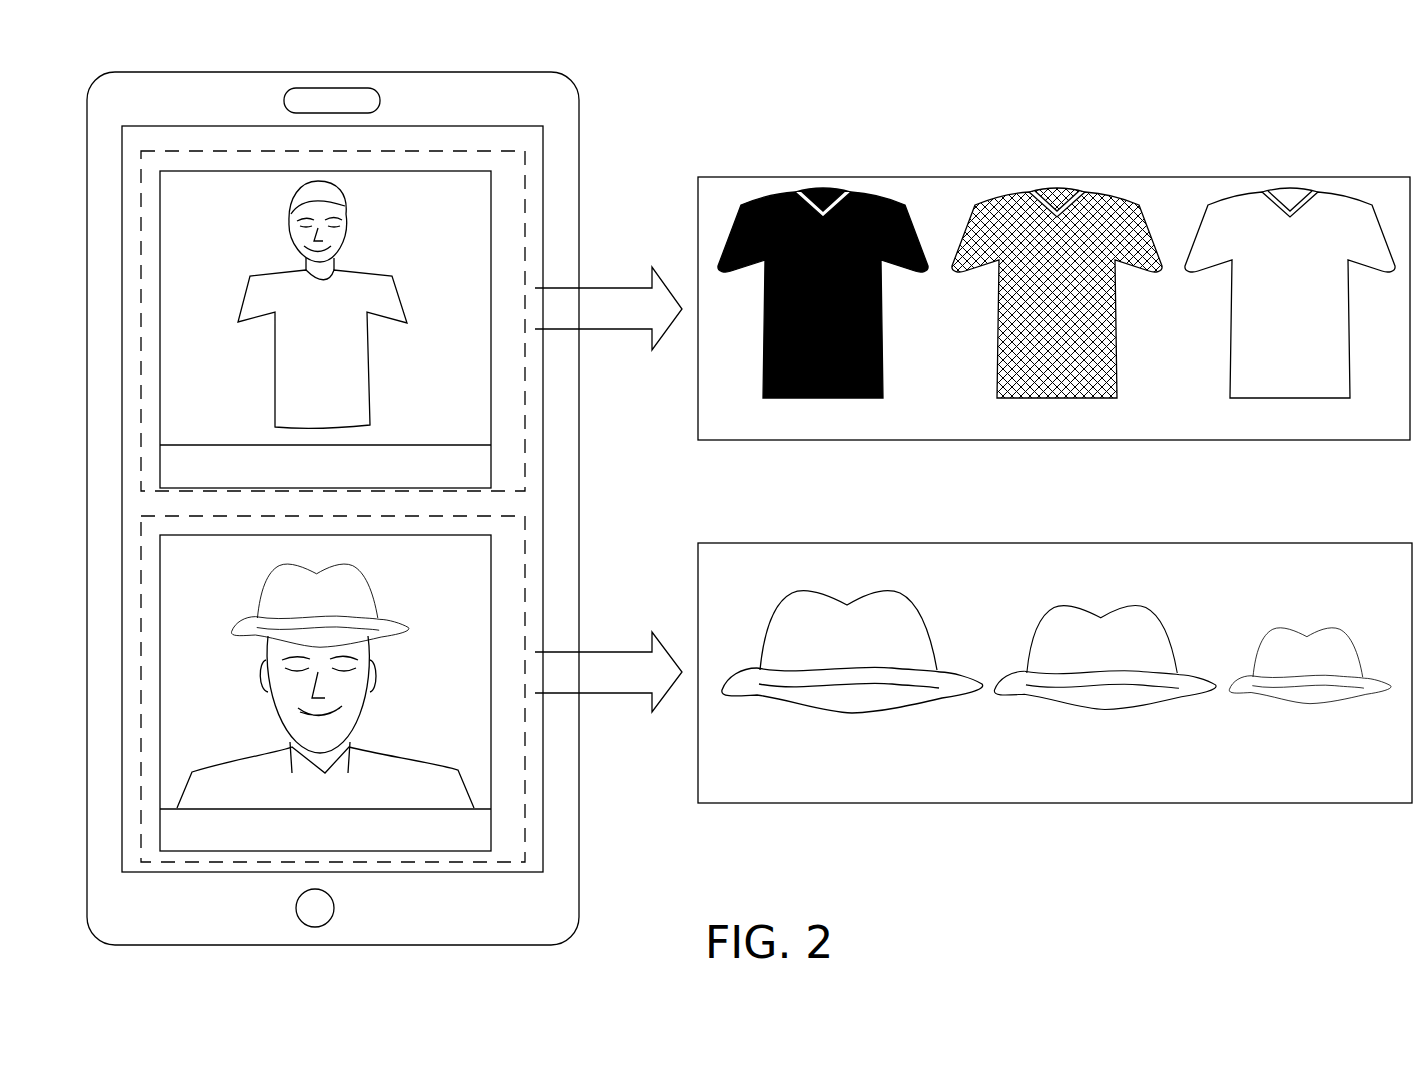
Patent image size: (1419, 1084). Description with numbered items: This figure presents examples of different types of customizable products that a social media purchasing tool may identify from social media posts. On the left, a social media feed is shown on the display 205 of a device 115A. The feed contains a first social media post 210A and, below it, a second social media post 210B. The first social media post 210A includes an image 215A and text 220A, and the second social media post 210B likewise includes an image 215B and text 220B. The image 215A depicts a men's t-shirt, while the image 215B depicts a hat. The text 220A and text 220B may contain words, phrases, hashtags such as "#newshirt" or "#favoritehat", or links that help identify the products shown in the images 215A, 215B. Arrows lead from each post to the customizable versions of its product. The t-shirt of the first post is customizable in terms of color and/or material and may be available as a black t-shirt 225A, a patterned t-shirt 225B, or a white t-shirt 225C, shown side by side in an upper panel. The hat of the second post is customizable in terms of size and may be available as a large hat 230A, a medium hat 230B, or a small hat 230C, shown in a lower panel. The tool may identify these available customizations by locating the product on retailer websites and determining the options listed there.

The device 115A is at (552, 98).
The display 205 is at (545, 130).
The first social media post 210A is at (525, 172).
The image 215A is at (465, 228).
The text 220A is at (465, 455).
The second social media post 210B is at (525, 527).
The image 215B is at (450, 598).
The text 220B is at (470, 848).
The black t-shirt 225A is at (826, 186).
The patterned t-shirt 225B is at (1060, 186).
The white t-shirt 225C is at (1292, 186).
The large hat 230A is at (790, 700).
The medium hat 230B is at (1045, 700).
The small hat 230C is at (1268, 695).